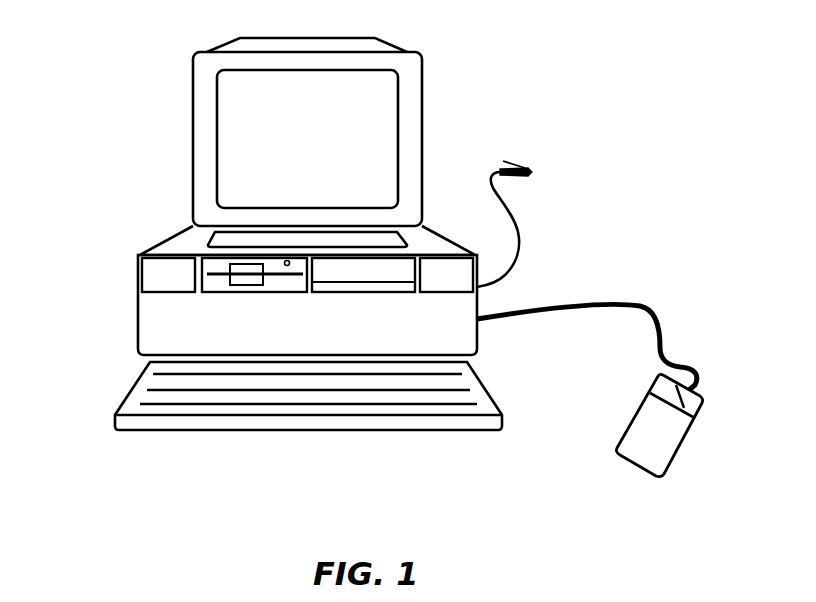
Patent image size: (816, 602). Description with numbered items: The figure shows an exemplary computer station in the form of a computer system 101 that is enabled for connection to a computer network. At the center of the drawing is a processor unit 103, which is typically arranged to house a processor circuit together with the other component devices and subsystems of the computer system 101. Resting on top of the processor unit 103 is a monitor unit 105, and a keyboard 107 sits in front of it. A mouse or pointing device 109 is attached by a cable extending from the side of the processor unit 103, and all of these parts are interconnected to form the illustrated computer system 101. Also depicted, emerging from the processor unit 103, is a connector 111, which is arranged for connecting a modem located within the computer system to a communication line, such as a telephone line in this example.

The computer system 101 is at (541, 241).
The processor unit 103 is at (155, 303).
The monitor unit 105 is at (192, 150).
The keyboard 107 is at (130, 385).
The mouse or pointing device 109 is at (698, 426).
The connector 111 is at (537, 172).